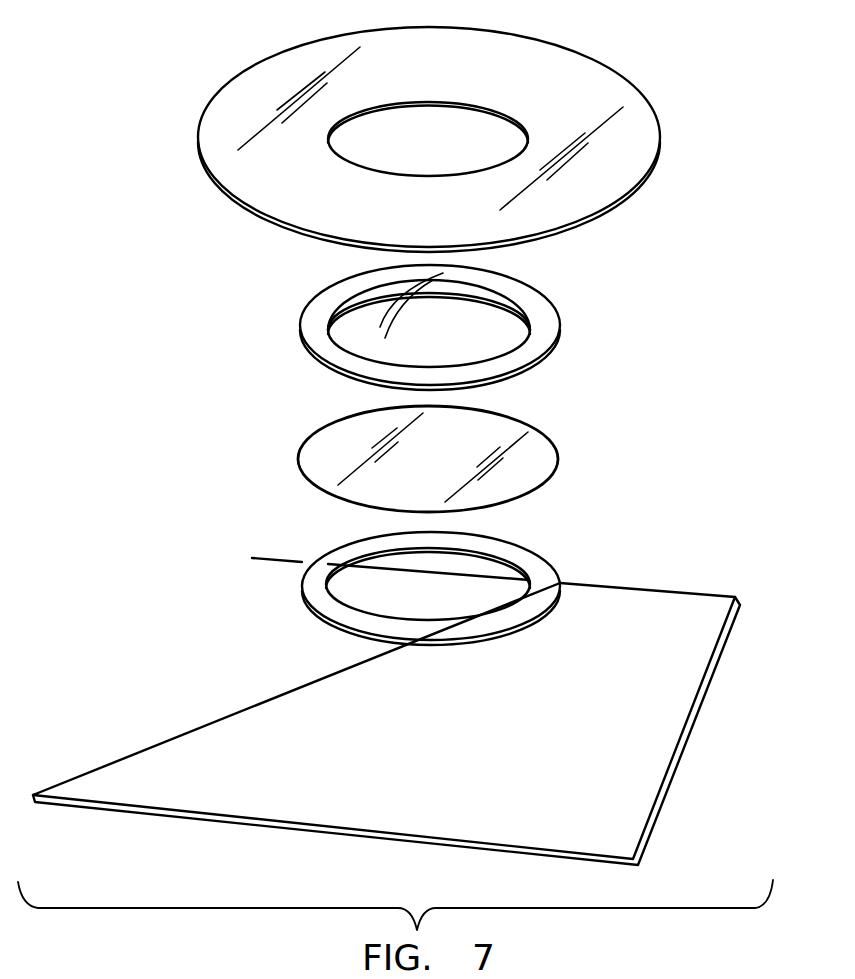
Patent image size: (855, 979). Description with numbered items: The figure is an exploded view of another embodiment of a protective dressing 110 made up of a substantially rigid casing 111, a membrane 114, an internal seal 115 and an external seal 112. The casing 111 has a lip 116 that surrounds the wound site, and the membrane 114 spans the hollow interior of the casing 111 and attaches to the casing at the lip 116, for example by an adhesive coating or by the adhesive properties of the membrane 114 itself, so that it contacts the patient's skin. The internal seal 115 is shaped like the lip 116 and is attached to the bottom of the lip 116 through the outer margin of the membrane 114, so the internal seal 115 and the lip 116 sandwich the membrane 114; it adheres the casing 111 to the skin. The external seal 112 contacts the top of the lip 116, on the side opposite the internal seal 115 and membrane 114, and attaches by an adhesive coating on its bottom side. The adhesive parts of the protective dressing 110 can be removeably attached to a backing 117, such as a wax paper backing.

The protective dressing 110 is at (667, 978).
The substantially rigid casing 111 is at (368, 325).
The external seal 112 is at (203, 73).
The membrane 114 is at (281, 453).
The internal seal 115 is at (334, 539).
The lip 116 is at (327, 349).
The backing 117 is at (663, 625).